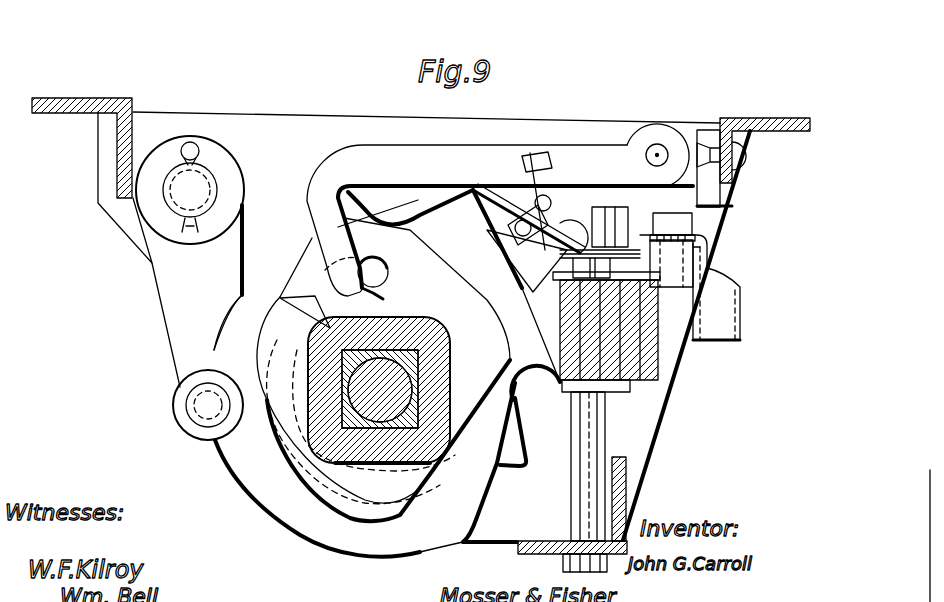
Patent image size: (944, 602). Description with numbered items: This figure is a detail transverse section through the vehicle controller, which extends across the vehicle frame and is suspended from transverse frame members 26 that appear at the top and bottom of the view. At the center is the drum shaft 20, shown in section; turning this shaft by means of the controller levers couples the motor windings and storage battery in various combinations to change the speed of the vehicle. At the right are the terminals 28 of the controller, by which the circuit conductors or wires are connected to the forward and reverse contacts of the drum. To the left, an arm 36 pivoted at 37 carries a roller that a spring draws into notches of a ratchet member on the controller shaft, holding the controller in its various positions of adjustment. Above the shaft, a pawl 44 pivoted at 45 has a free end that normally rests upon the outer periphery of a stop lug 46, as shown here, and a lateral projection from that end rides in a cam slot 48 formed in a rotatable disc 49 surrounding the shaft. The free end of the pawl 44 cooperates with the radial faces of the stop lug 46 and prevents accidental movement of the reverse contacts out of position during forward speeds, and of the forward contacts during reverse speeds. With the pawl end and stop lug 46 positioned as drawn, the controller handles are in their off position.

The drum shaft 20 is at (418, 372).
The transverse frame member 26 is at (72, 85).
The terminal 28 is at (735, 310).
The arm 36 is at (180, 276).
The pivot 37 is at (197, 184).
The pawl 44 is at (415, 145).
The pivot 45 is at (653, 153).
The stop lug 46 is at (383, 299).
The cam slot 48 is at (272, 453).
The rotatable disc 49 is at (252, 482).